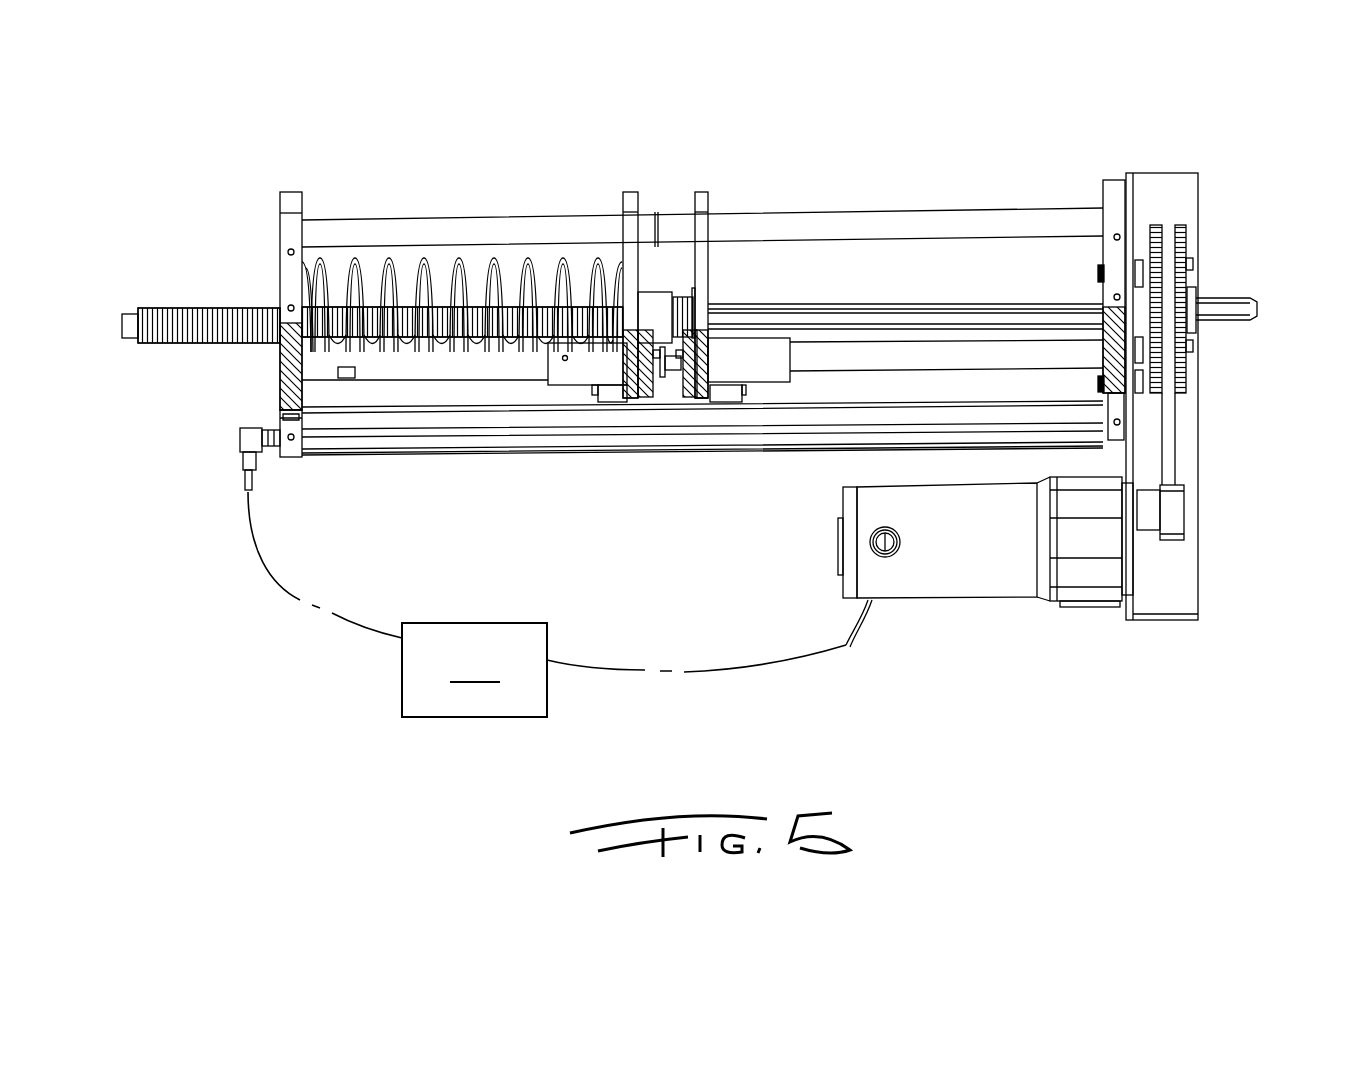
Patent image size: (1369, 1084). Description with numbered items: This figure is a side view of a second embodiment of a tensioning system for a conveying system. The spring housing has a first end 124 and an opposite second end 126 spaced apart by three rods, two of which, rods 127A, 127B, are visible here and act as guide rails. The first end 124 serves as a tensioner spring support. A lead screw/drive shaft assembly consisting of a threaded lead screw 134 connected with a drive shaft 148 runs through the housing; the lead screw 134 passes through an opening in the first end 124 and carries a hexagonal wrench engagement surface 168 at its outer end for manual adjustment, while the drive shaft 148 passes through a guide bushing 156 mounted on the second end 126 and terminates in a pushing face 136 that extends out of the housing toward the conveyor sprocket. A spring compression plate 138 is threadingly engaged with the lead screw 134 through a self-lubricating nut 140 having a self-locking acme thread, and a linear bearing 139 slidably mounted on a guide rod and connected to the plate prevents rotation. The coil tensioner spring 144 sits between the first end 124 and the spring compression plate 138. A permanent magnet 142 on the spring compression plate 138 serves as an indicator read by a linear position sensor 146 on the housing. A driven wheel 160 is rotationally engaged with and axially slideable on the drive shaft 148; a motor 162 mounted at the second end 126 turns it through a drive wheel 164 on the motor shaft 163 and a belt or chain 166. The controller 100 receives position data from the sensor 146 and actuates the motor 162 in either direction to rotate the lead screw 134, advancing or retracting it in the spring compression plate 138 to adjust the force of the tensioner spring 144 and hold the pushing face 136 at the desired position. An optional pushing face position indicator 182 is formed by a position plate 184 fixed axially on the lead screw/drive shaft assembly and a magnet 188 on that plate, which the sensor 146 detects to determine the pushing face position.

The controller 100 is at (547, 604).
The first end 124 is at (290, 190).
The second end 126 is at (1147, 172).
The rod 127A is at (433, 380).
The rod 127B is at (990, 212).
The threaded lead screw 134 is at (246, 345).
The pushing face 136 is at (1258, 311).
The spring compression plate 138 is at (623, 192).
The linear bearing 139 is at (557, 387).
The nut 140 is at (660, 292).
The permanent magnet 142 is at (612, 402).
The tensioner spring 144 is at (495, 262).
The sensor 146 is at (603, 452).
The drive shaft 148 is at (840, 300).
The guide bushing 156 is at (1193, 338).
The driven wheel 160 is at (1182, 225).
The motor 162 is at (990, 600).
The shaft 163 is at (1155, 523).
The drive wheel 164 is at (1189, 537).
The belt or chain 166 is at (1180, 426).
The wrench engagement surface 168 is at (118, 312).
The pushing face position indicator 182 is at (707, 400).
The position plate 184 is at (710, 200).
The magnet 188 is at (728, 402).